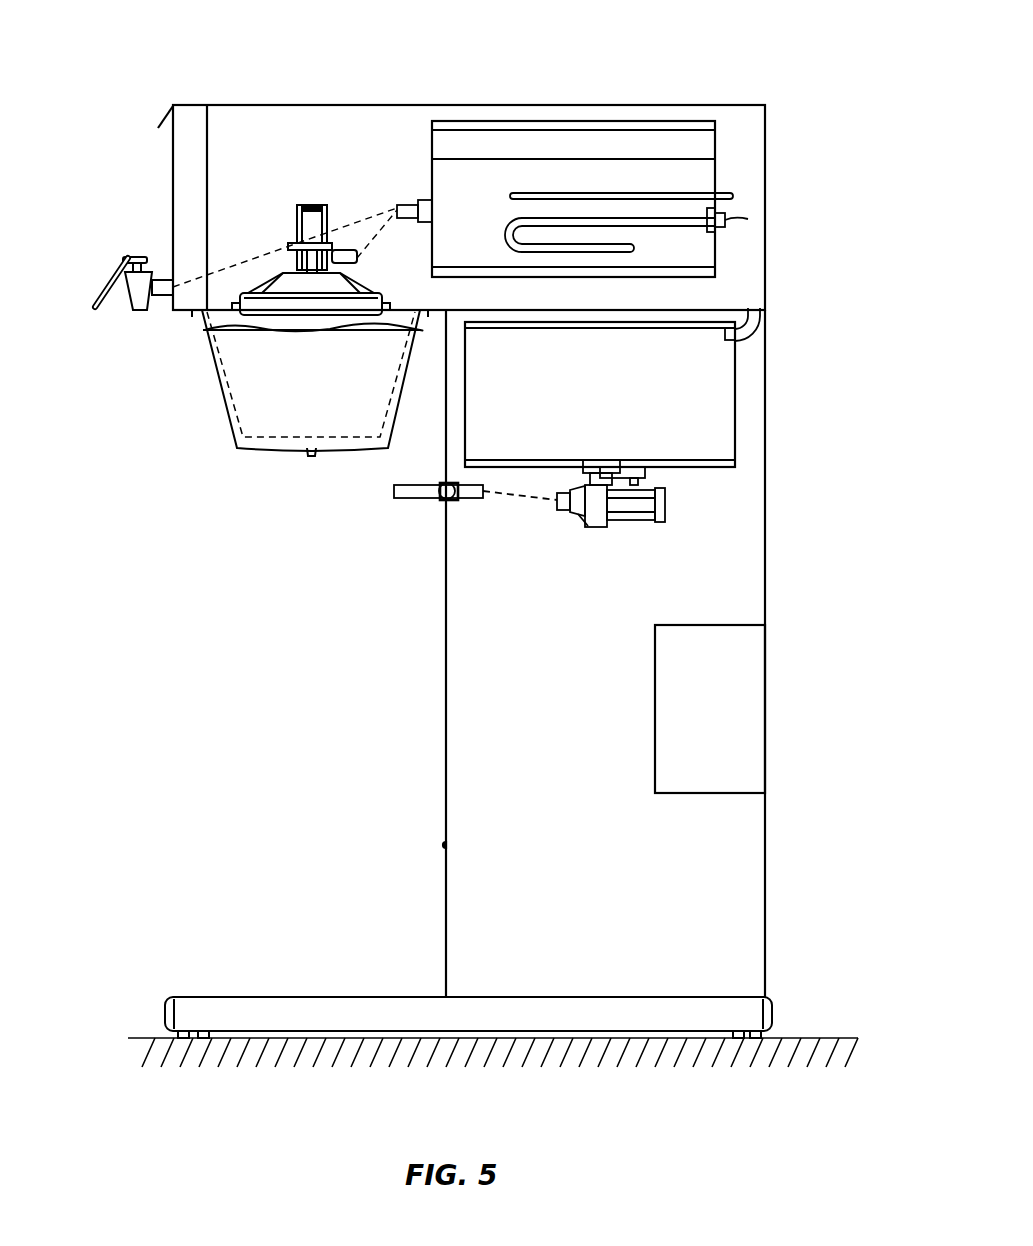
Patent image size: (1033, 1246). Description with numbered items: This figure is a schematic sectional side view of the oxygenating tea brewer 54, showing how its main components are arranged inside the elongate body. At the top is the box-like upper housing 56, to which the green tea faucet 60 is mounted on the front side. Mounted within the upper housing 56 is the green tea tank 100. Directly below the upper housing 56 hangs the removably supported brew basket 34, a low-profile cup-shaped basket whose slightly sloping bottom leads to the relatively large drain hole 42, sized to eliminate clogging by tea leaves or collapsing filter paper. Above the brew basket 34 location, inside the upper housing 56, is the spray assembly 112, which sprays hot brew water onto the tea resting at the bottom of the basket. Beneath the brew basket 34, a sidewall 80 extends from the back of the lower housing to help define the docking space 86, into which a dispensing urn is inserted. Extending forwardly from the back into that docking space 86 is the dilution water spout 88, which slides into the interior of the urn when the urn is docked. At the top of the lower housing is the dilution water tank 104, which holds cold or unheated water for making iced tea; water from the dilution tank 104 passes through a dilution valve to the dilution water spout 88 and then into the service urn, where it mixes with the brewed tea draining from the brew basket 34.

The oxygenating tea brewer 54 is at (783, 62).
The upper housing 56 is at (285, 120).
The green tea faucet 60 is at (127, 290).
The brew basket 34 is at (245, 408).
The drain hole 42 is at (311, 456).
The dilution water spout 88 is at (423, 485).
The docking space 86 is at (273, 641).
The sidewall 80 is at (470, 700).
The green tea tank 100 is at (560, 145).
The dilution water tank 104 is at (687, 410).
The spray assembly 112 is at (278, 290).